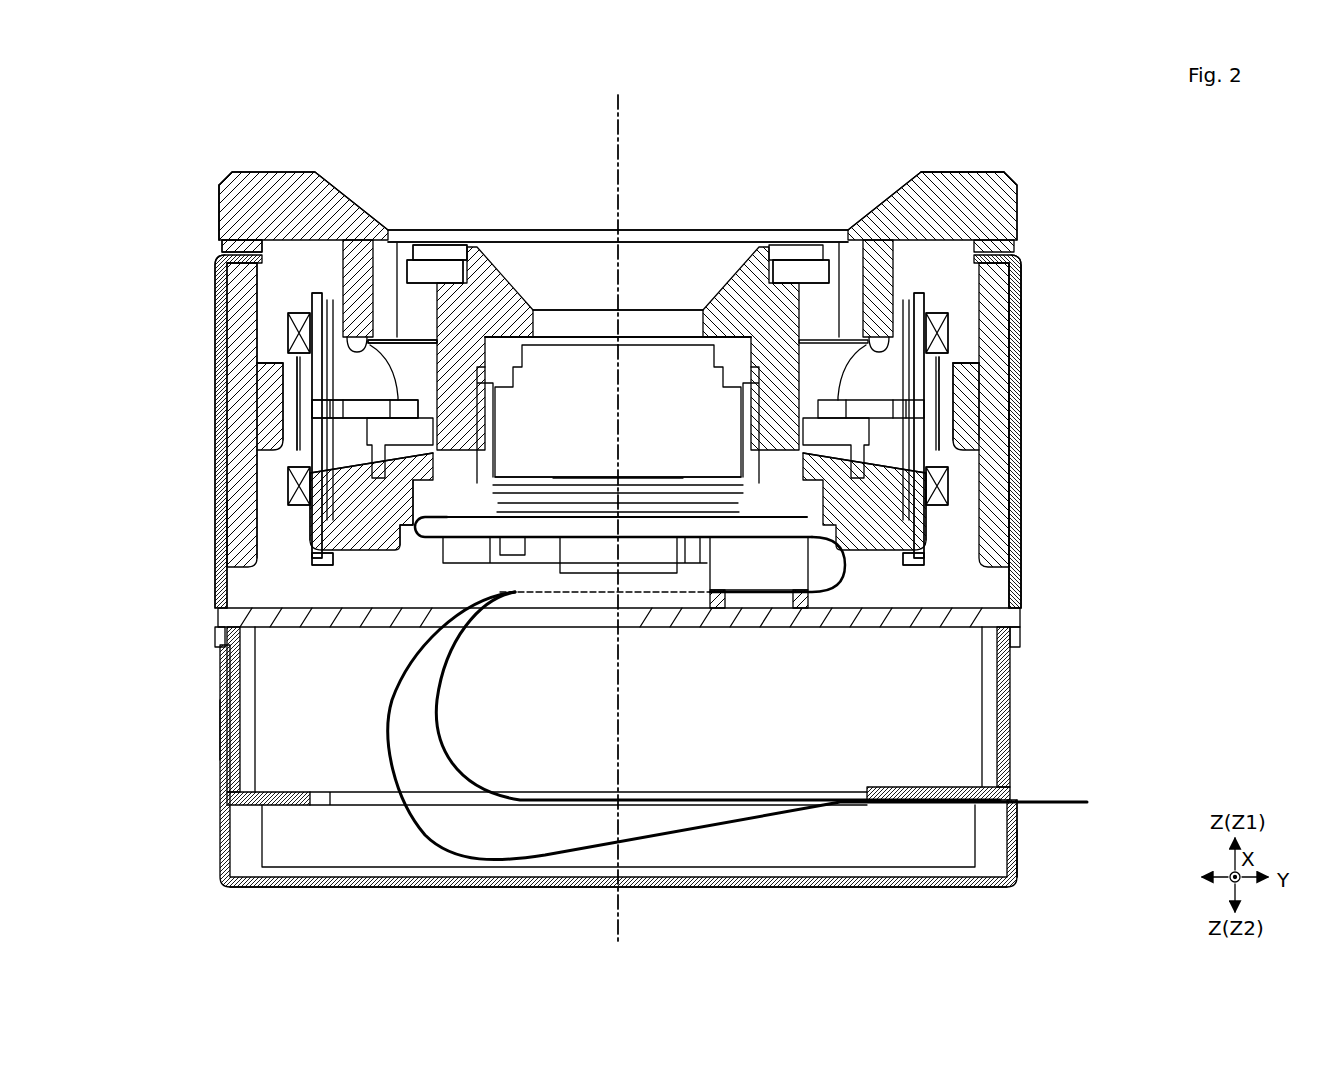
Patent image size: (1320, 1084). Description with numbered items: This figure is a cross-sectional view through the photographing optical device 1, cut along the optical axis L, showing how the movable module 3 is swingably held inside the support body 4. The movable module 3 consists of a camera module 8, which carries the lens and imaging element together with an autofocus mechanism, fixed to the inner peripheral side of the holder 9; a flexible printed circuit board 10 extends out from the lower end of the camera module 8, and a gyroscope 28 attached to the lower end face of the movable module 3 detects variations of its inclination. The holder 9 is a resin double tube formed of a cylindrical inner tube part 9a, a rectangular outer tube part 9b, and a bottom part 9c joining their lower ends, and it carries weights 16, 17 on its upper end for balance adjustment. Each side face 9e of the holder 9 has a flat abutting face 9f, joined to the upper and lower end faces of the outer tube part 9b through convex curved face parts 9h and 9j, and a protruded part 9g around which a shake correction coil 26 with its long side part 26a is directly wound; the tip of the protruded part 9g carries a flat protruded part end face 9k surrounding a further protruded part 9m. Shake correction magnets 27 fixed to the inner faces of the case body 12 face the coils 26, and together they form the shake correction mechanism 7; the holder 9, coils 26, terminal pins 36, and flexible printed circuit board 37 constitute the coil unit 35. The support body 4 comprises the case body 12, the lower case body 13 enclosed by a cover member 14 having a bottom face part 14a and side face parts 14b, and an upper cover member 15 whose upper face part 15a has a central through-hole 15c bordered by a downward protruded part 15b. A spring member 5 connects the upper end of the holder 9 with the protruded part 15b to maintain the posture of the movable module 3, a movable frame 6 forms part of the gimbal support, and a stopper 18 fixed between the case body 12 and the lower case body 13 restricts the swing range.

The photographing optical device 1 is at (1103, 160).
The movable module 3 is at (772, 232).
The support body 4 is at (1059, 412).
The spring member 5 is at (415, 340).
The movable frame 6 is at (255, 420).
The shake correction mechanism 7 is at (1038, 306).
The camera module 8 is at (565, 338).
The holder 9 is at (618, 346).
The inner tube part 9a is at (795, 290).
The outer tube part 9b is at (965, 440).
The bottom part 9c is at (377, 525).
The side face 9e is at (617, 496).
The abutting face 9f is at (330, 520).
The protruded part 9g is at (620, 395).
The curved face part 9h is at (315, 310).
The curved face part 9j is at (307, 558).
The protruded part end face 9k is at (280, 380).
The protruded part 9m is at (305, 410).
The flexible printed circuit board 10 is at (390, 738).
The case body 12 is at (1025, 262).
The lower case body 13 is at (1007, 727).
The cover member 14 is at (375, 890).
The bottom face part 14a is at (375, 890).
The side face part 14b is at (215, 730).
The cover member 15 is at (618, 178).
The upper face part 15a is at (940, 170).
The protruded part 15b is at (262, 276).
The through-hole 15c is at (848, 235).
The weight 16 is at (437, 247).
The weight 17 is at (457, 258).
The stopper 18 is at (1020, 620).
The shake correction coil 26 is at (618, 409).
The long side part 26a is at (290, 335).
The shake correction magnet 27 is at (225, 545).
The gyroscope 28 is at (650, 580).
The coil unit 35 is at (1023, 292).
The terminal pin 36 is at (330, 560).
The flexible printed circuit board 37 is at (437, 713).
The optical axis L is at (622, 118).